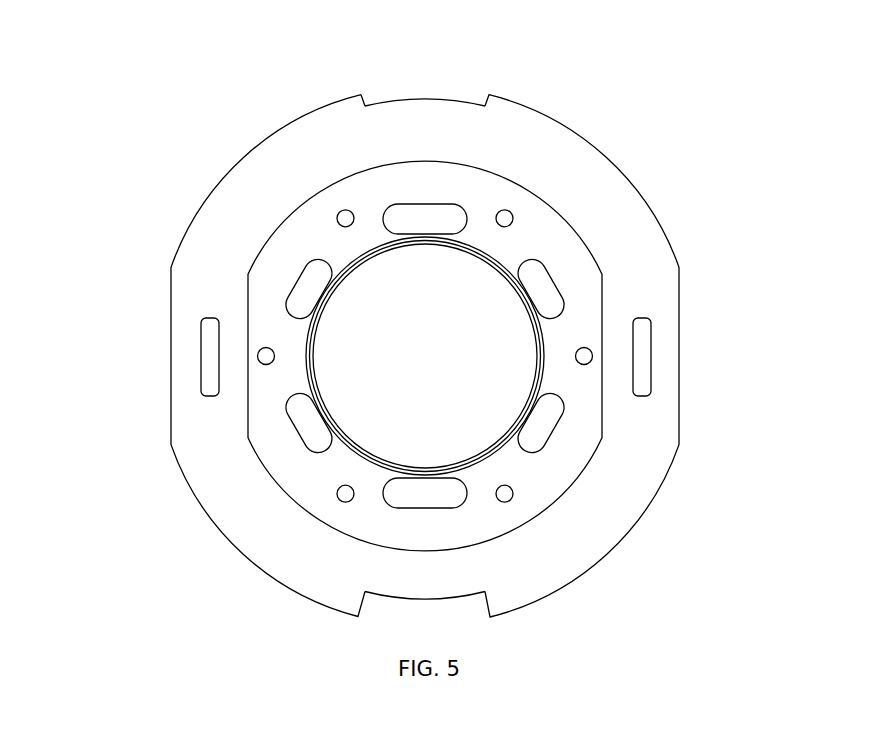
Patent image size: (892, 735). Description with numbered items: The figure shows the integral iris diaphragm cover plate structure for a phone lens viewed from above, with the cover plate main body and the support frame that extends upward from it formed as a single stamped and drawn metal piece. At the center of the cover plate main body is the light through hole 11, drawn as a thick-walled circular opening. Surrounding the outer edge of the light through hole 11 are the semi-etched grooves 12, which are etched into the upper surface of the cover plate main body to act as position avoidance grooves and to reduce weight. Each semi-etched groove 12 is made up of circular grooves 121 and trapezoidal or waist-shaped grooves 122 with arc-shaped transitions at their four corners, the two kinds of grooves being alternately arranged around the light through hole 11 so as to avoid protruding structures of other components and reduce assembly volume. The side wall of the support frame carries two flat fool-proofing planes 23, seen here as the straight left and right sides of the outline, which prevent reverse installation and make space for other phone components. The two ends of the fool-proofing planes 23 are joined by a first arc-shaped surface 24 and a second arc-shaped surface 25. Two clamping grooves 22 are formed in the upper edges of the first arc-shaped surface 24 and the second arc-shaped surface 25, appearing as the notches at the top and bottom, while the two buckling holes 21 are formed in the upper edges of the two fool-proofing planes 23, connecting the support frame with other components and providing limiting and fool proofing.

The light through hole 11 is at (470, 327).
The semi-etched groove 12 is at (534, 299).
The circular groove 121 is at (508, 215).
The trapezoidal groove 122 is at (545, 305).
The buckling hole 21 is at (202, 353).
The clamping groove 22 is at (428, 100).
The fool-proofing plane 23 is at (192, 413).
The first arc-shaped surface 24 is at (320, 175).
The second arc-shaped surface 25 is at (540, 560).